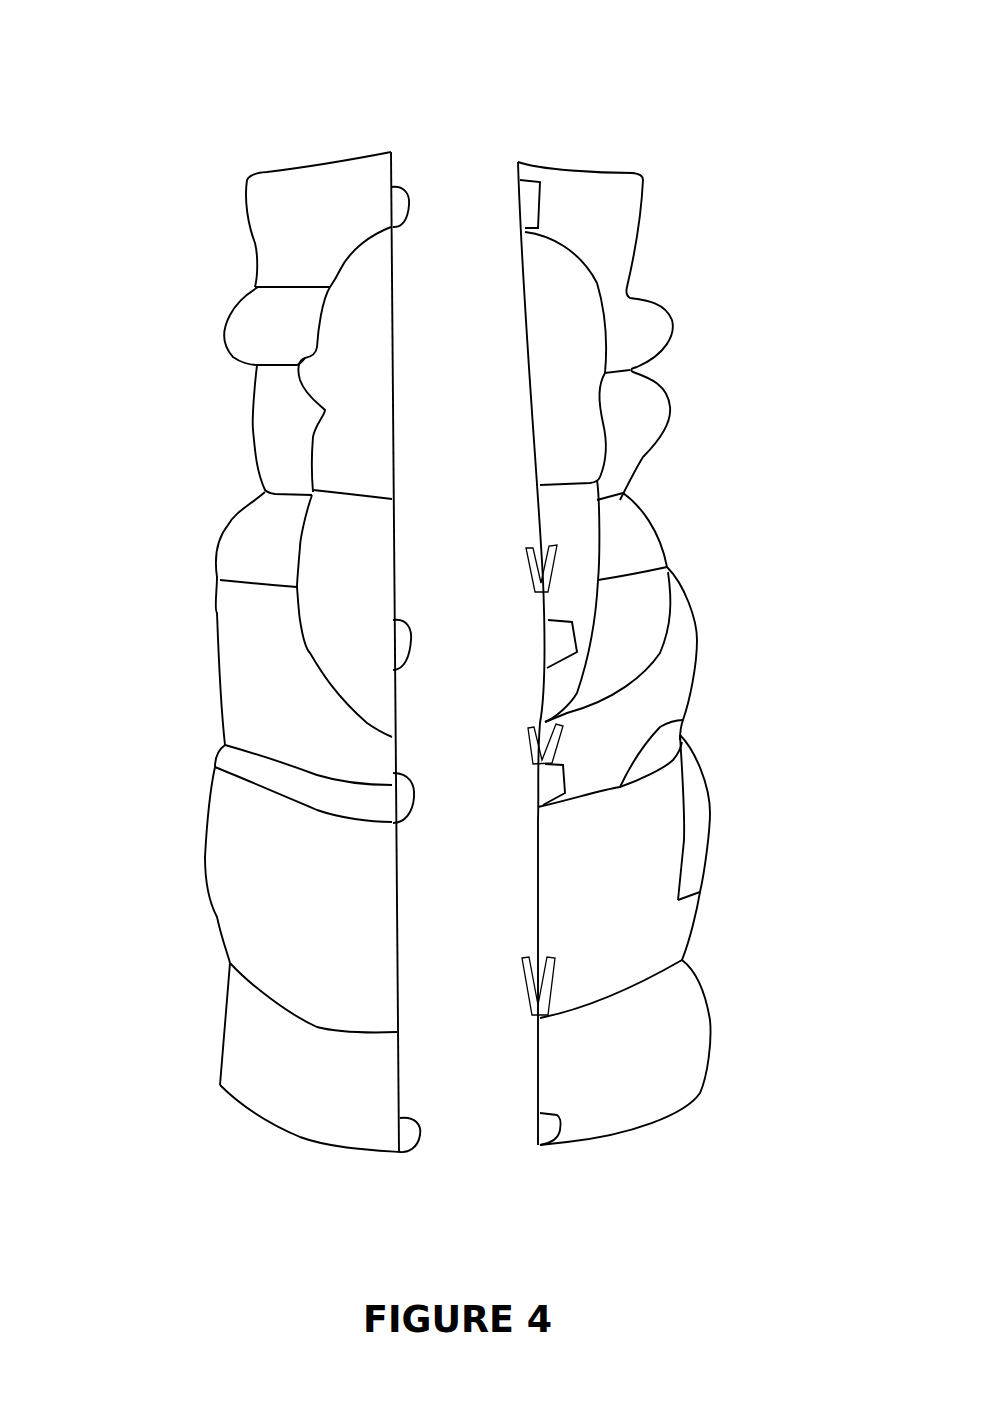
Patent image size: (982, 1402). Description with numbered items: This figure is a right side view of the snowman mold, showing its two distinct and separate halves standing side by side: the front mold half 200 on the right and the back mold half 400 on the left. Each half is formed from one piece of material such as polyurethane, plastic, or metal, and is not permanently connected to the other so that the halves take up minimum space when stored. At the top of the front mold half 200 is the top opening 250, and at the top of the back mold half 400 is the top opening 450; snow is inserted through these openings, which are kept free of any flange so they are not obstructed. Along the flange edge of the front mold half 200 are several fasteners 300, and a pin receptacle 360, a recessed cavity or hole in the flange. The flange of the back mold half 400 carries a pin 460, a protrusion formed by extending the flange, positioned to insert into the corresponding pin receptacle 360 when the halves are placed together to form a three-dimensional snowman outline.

The front mold half 200 is at (698, 1130).
The top opening 250 is at (587, 172).
The fastener 300 is at (562, 553).
The pin receptacle 360 is at (567, 777).
The back mold half 400 is at (192, 1187).
The top opening 450 is at (307, 163).
The pin 460 is at (386, 648).